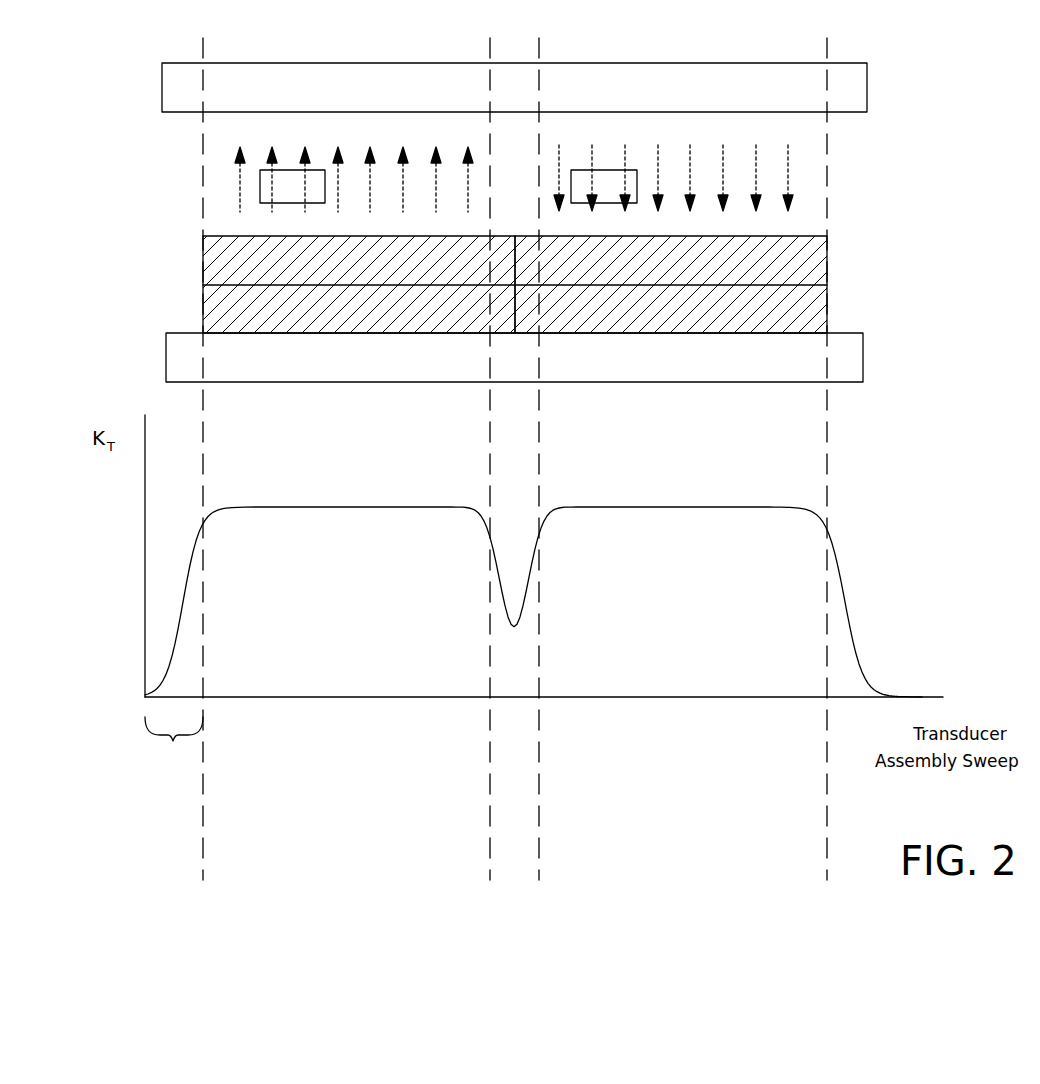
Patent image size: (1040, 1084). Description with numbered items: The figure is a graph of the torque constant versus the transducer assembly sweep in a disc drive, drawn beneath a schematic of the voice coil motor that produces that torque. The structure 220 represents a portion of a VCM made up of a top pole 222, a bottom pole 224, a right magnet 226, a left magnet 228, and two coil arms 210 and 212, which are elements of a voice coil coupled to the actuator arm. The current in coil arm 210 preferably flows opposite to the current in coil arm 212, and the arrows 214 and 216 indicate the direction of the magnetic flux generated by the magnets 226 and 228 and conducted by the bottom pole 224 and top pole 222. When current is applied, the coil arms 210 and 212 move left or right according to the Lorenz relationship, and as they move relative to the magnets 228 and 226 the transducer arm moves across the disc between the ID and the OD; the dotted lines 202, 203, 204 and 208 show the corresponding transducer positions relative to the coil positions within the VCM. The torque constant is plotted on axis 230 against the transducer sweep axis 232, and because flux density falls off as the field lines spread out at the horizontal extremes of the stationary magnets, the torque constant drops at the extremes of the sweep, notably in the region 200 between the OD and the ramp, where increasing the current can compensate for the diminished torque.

The region between the OD and the ramp 200 is at (172, 766).
The dotted line 202 is at (203, 473).
The dotted line 203 is at (489, 457).
The dotted line 204 is at (539, 498).
The dotted line 208 is at (827, 488).
The coil arm 210 is at (318, 170).
The coil arm 212 is at (602, 170).
The arrows 214 is at (814, 186).
The arrows 216 is at (214, 182).
The structure 220 is at (915, 98).
The top pole 222 is at (162, 80).
The bottom pole 224 is at (167, 348).
The right magnet 226 is at (827, 273).
The left magnet 228 is at (203, 285).
The torque constant axis 230 is at (145, 530).
The transducer sweep axis 232 is at (903, 697).